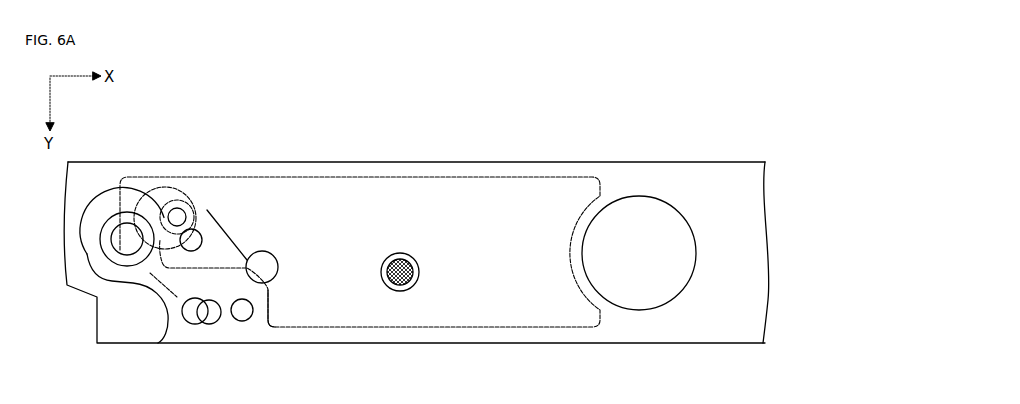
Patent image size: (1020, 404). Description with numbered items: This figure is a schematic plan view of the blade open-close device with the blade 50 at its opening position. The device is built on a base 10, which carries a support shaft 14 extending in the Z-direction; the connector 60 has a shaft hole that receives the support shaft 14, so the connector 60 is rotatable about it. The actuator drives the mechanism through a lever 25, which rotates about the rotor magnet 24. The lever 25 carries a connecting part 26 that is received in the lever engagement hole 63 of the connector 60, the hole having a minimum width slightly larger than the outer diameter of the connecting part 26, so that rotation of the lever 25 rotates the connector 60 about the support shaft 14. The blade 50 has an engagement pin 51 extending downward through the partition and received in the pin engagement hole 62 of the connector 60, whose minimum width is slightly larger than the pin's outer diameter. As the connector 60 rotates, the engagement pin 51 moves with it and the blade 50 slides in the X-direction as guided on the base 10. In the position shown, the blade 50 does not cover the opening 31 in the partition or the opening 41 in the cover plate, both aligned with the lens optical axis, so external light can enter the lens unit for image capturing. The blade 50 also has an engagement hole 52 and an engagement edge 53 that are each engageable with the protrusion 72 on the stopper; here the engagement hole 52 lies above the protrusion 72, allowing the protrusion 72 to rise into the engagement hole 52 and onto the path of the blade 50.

The base 10 is at (607, 343).
The support shaft 14 is at (270, 330).
The rotor magnet 24 is at (110, 222).
The lever 25 is at (137, 288).
The connecting part 26 is at (197, 312).
The opening 31 is at (639, 209).
The opening 41 is at (639, 195).
The blade 50 is at (513, 177).
The engagement pin 51 is at (197, 200).
The engagement hole 52 is at (405, 290).
The engagement edge 53 is at (247, 258).
The connector 60 is at (167, 323).
The pin engagement hole 62 is at (213, 232).
The lever engagement hole 63 is at (245, 313).
The protrusion 72 is at (397, 253).